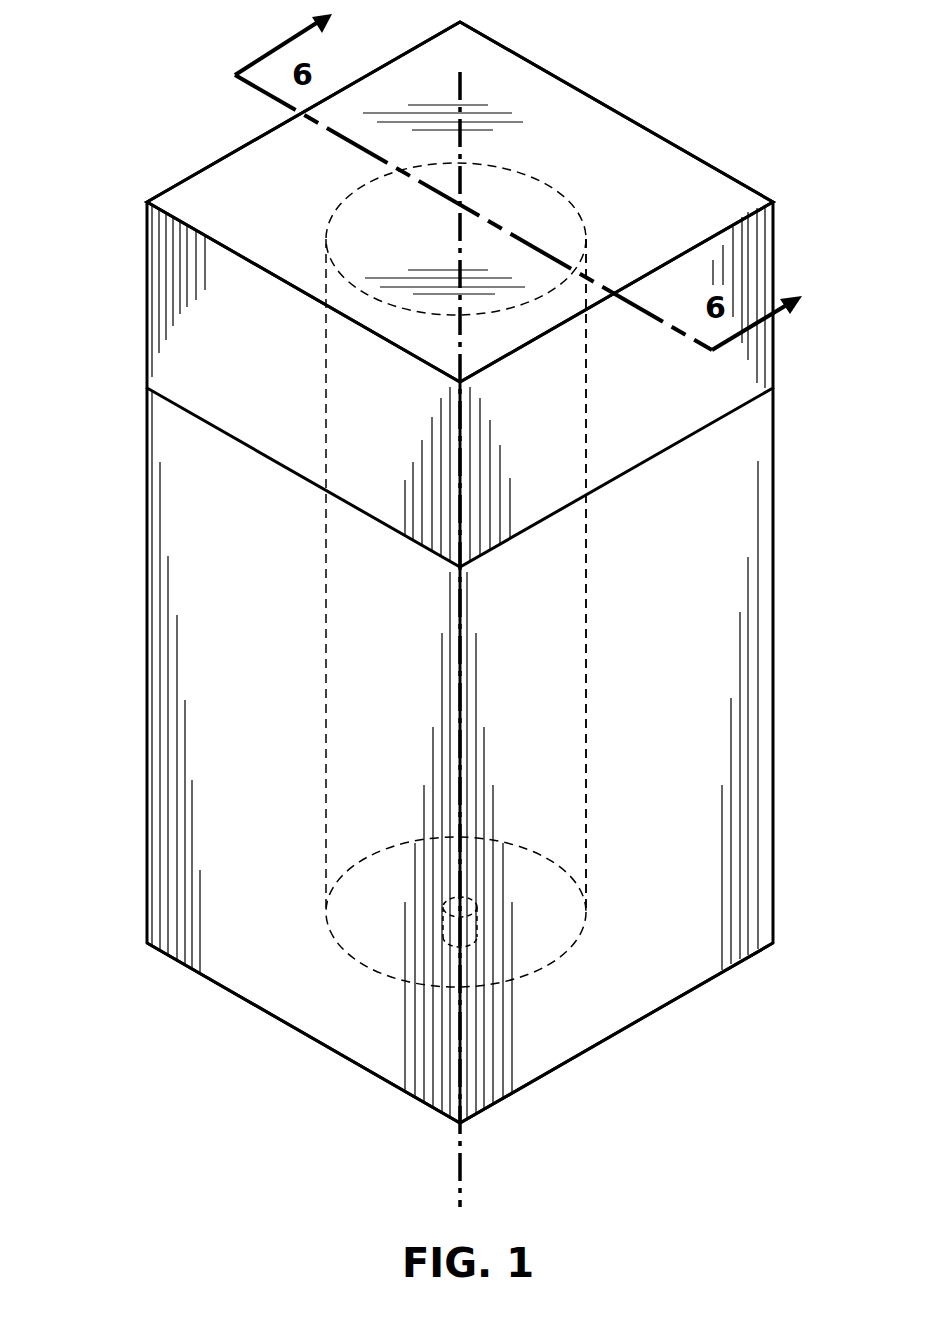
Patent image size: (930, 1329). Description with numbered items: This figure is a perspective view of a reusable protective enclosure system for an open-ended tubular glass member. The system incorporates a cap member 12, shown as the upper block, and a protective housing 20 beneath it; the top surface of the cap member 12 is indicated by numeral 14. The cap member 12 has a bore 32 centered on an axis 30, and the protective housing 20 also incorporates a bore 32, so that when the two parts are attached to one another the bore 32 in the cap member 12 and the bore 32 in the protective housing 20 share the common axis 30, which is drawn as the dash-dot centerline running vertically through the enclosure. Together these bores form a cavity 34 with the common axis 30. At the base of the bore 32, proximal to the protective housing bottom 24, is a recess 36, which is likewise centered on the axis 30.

The cap member 12 is at (217, 330).
The top surface 14 is at (614, 137).
The protective housing 20 is at (217, 793).
The protective housing bottom 24 is at (340, 1055).
The axis 30 is at (448, 87).
The bore 32 is at (318, 575).
The cavity 34 is at (508, 683).
The recess 36 is at (472, 930).